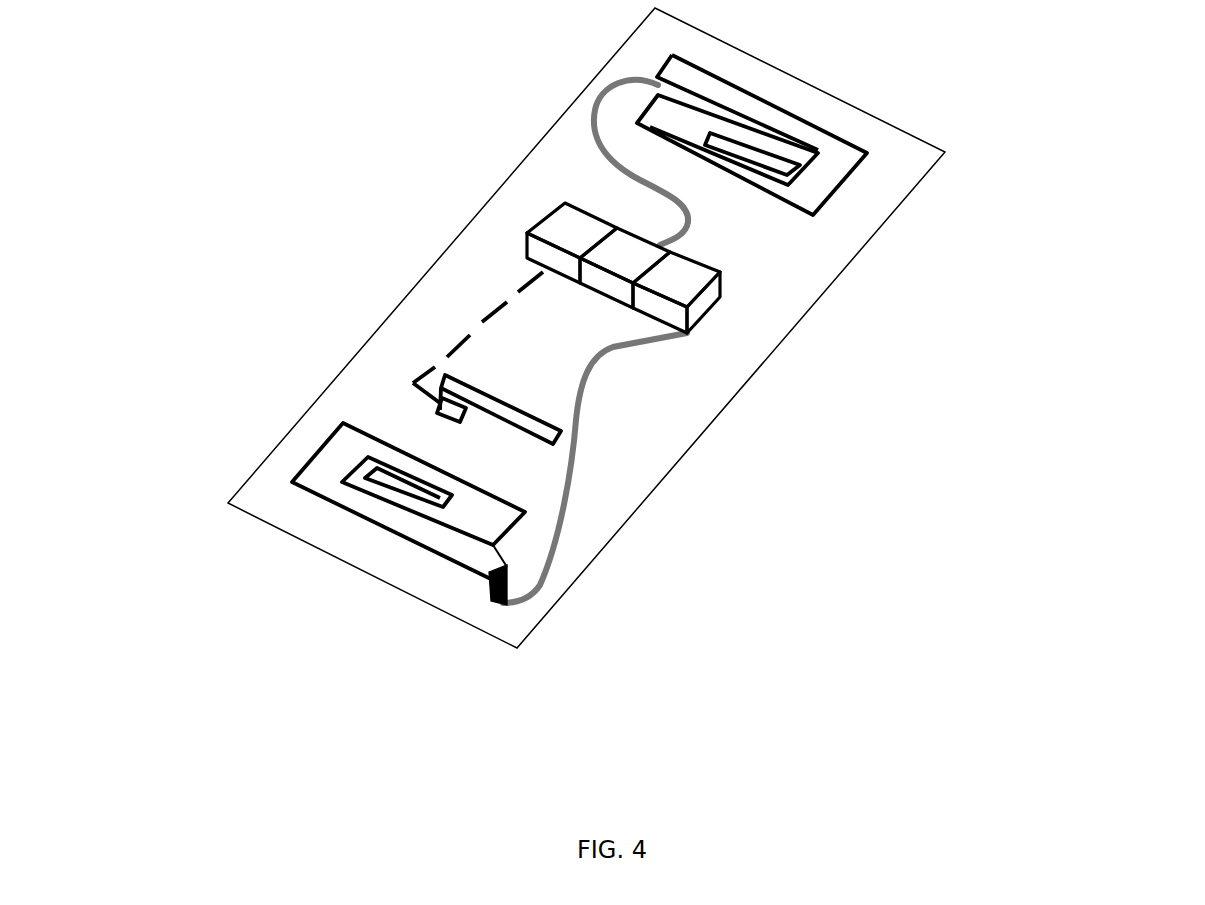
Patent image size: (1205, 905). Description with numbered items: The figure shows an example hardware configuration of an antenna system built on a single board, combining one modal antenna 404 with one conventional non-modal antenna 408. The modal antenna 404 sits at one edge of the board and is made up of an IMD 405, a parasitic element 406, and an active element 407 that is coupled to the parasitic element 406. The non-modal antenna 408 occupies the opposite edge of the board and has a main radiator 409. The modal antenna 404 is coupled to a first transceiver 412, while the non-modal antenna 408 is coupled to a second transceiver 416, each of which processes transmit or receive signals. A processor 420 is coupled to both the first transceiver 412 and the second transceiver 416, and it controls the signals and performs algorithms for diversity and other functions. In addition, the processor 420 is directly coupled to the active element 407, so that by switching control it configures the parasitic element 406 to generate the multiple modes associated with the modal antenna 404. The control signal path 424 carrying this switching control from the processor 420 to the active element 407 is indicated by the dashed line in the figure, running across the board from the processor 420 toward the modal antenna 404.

The modal antenna 404 is at (294, 506).
The IMD 405 is at (428, 547).
The parasitic element 406 is at (523, 405).
The active element 407 is at (465, 412).
The non-modal antenna 408 is at (911, 158).
The main radiator 409 is at (773, 103).
The transceiver 1 412 is at (713, 288).
The transceiver 2 416 is at (603, 280).
The processor 420 is at (568, 230).
The control signal path 424 is at (500, 300).